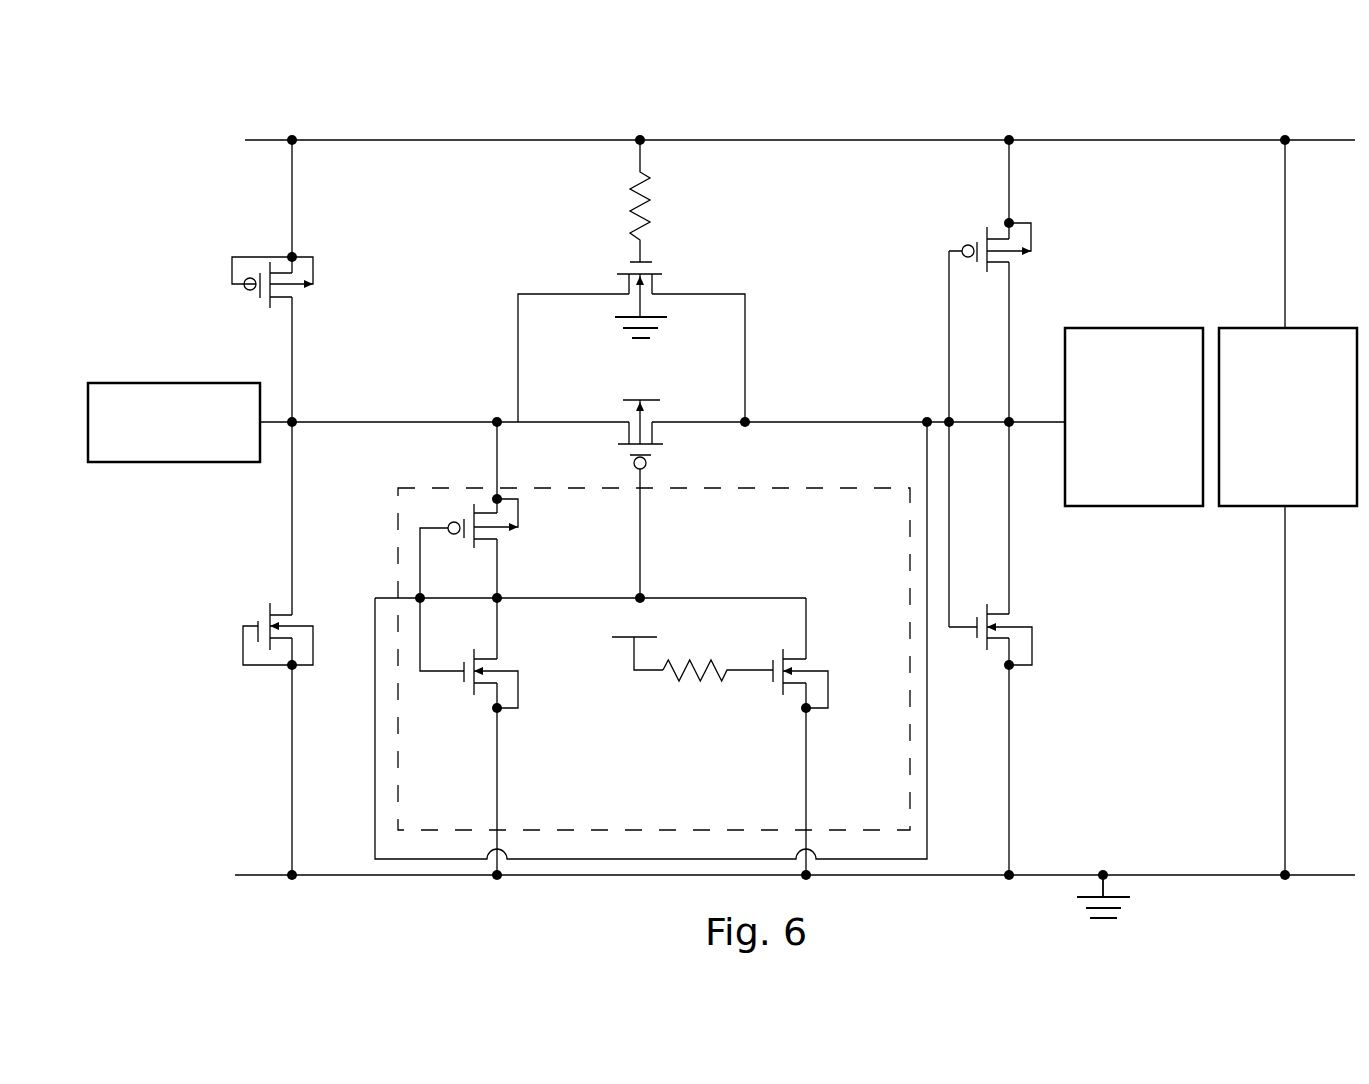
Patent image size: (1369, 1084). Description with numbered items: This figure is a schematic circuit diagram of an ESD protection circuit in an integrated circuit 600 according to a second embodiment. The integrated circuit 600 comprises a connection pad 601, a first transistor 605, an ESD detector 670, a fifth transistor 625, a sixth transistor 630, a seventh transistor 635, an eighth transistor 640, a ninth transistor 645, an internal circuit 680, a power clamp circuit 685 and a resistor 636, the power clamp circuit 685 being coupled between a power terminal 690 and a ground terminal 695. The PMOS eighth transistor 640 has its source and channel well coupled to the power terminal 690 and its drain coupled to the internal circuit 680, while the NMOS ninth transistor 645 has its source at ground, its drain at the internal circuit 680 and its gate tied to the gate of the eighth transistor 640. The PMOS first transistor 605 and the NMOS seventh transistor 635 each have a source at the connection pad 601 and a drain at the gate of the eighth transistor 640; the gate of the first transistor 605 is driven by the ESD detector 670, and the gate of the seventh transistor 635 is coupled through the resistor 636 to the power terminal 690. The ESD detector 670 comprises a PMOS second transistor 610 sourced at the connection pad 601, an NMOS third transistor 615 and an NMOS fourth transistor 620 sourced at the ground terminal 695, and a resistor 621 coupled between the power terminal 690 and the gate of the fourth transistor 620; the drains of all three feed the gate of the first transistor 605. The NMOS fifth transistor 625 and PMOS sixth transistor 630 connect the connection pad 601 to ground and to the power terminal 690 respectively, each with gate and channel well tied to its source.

The integrated circuit 600 is at (166, 145).
The connection pad 601 is at (160, 383).
The first transistor 605 is at (650, 419).
The second transistor 610 is at (505, 540).
The third transistor 615 is at (500, 664).
The fourth transistor 620 is at (808, 664).
The resistor 621 is at (673, 681).
The fifth transistor 625 is at (292, 620).
The sixth transistor 630 is at (302, 291).
The seventh transistor 635 is at (629, 297).
The resistor 636 is at (645, 231).
The eighth transistor 640 is at (1016, 263).
The ninth transistor 645 is at (1010, 621).
The ESD detector 670 is at (398, 564).
The internal circuit 680 is at (1130, 328).
The power clamp circuit 685 is at (1300, 328).
The power terminal 690 is at (1085, 140).
The ground terminal 695 is at (1156, 875).